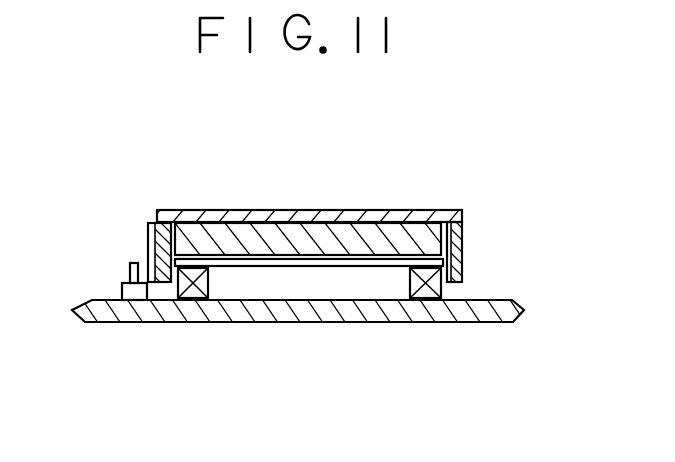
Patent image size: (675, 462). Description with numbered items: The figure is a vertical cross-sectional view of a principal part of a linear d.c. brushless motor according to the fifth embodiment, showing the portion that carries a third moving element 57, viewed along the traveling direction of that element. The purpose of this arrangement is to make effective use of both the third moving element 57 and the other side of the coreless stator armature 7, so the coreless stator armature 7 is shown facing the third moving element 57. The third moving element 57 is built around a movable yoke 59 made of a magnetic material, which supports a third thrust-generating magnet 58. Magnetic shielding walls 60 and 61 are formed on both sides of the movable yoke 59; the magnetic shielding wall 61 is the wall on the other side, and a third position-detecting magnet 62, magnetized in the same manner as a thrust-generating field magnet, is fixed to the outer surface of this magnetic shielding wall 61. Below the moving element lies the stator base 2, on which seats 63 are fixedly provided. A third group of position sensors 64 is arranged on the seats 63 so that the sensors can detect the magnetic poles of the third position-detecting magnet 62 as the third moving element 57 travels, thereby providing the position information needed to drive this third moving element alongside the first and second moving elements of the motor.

The stator base 2 is at (252, 322).
The coreless stator armature 7 is at (242, 284).
The third moving element 57 is at (265, 209).
The third thrust-generating magnet 58 is at (430, 235).
The movable yoke 59 is at (397, 210).
The magnetic shielding wall 60 is at (462, 262).
The magnetic shielding wall 61 is at (157, 220).
The third position-detecting magnet 62 is at (147, 240).
The seats 63 is at (137, 300).
The third group of position sensors 64 is at (128, 270).